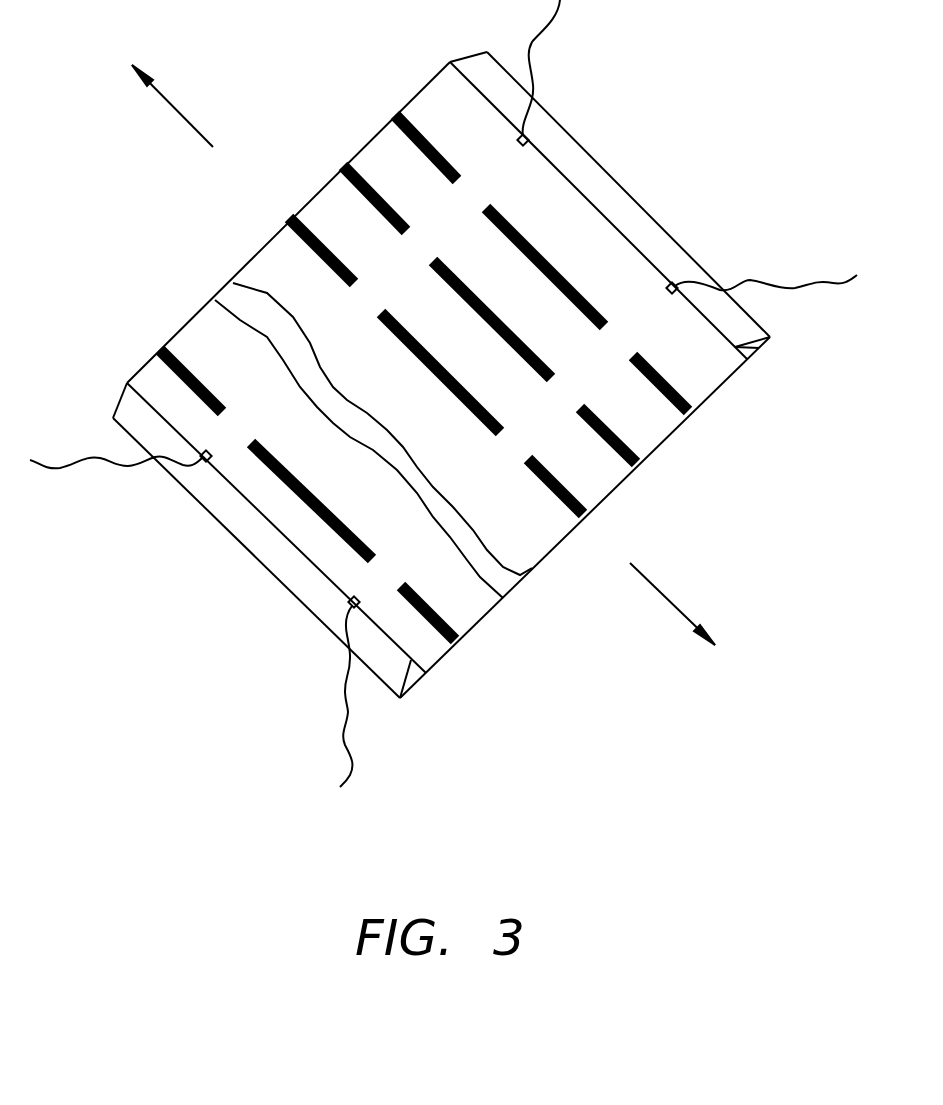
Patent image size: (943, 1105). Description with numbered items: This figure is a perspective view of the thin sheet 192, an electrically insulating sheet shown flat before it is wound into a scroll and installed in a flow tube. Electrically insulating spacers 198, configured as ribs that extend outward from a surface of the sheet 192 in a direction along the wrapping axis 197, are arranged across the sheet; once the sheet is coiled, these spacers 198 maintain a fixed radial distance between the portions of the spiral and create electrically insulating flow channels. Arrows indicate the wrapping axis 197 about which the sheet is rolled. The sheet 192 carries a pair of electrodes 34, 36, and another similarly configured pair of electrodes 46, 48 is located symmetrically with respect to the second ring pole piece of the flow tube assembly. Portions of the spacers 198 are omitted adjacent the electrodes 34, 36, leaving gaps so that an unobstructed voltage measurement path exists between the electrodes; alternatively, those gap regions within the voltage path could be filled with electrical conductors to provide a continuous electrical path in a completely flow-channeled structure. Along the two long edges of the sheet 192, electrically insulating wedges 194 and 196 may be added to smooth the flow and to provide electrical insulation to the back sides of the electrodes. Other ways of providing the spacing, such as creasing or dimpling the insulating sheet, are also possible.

The thin sheet 192 is at (660, 443).
The electrically insulating wedge 194 is at (413, 693).
The electrically insulating wedge 196 is at (770, 340).
The wrapping axis 197 is at (176, 110).
The electrically insulating spacers 198 is at (397, 113).
The electrode 34 is at (528, 141).
The electrode 36 is at (203, 462).
The electrode 46 is at (675, 284).
The electrode 48 is at (345, 603).